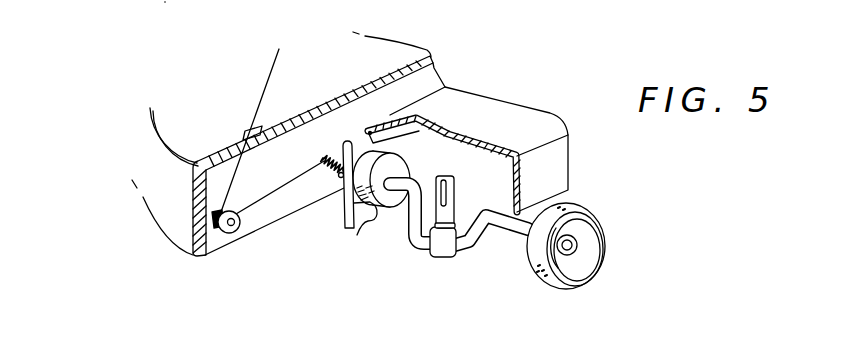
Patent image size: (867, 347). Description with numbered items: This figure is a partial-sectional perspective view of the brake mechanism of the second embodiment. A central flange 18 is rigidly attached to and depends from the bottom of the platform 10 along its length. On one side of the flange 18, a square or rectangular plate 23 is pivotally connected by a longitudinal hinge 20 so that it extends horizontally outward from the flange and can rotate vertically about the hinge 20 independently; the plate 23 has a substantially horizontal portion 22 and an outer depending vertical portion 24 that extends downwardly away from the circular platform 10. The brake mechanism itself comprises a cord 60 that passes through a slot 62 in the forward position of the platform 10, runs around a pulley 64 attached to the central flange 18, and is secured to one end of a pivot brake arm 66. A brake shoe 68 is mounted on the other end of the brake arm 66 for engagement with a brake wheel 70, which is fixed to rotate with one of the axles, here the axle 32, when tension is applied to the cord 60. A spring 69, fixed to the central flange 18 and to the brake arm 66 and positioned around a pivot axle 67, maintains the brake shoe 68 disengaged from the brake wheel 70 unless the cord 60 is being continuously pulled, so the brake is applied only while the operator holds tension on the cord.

The platform 10 is at (171, 103).
The flange 18 is at (216, 177).
The longitudinal hinge 20 is at (369, 131).
The horizontal portion 22 is at (522, 117).
The plate 23 is at (466, 108).
The depending vertical portion 24 is at (560, 166).
The axle 32 is at (422, 242).
The cord 60 is at (276, 70).
The slot 62 is at (249, 131).
The pulley 64 is at (236, 231).
The pivot brake arm 66 is at (346, 220).
The pivot axle 67 is at (338, 178).
The brake shoe 68 is at (368, 222).
The spring 69 is at (322, 157).
The brake wheel 70 is at (407, 165).